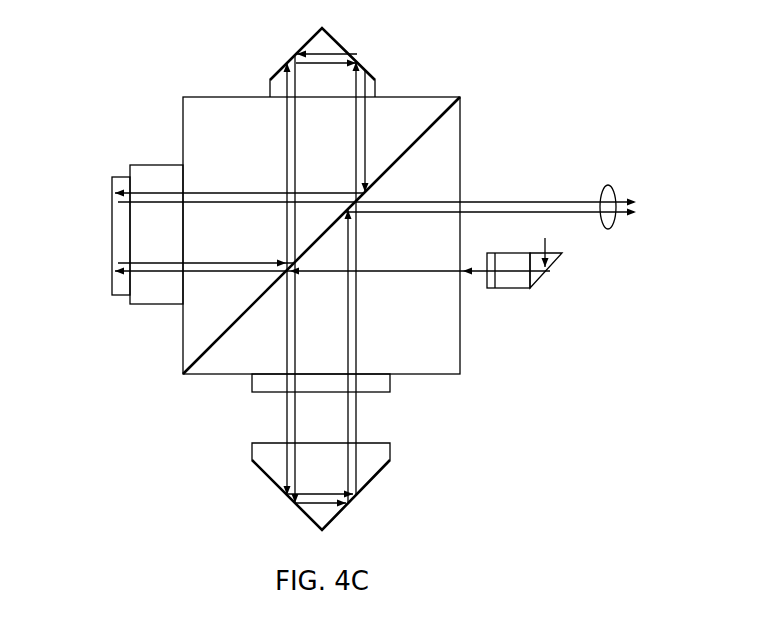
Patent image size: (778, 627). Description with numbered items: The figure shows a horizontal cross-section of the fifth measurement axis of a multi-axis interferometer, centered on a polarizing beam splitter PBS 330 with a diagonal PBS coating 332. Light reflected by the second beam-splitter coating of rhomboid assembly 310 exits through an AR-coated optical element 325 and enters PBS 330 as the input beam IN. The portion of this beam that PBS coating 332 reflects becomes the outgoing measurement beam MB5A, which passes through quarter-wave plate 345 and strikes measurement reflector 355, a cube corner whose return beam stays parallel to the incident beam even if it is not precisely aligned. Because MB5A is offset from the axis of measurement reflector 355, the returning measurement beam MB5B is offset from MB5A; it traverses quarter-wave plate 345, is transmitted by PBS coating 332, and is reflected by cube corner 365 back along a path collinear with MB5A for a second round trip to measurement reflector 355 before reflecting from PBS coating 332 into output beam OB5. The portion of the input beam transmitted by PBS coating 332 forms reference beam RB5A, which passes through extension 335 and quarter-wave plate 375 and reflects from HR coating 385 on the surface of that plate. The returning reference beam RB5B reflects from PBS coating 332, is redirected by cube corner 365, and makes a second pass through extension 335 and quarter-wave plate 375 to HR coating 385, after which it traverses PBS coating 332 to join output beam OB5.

The PBS 330 is at (338, 315).
The PBS coating 332 is at (407, 150).
The cube corner 365 is at (322, 45).
The measurement reflector 355 is at (268, 452).
The quarter-wave plate 345 is at (260, 383).
The extension 335 is at (173, 243).
The HR coating 385 is at (112, 210).
The quarter-wave plate 375 is at (120, 253).
The optical element 325 is at (490, 285).
The rhomboid assembly 310 is at (510, 283).
The input beam IN is at (332, 249).
The output beam OB5 is at (610, 228).
The reference beam RB5A is at (280, 262).
The reflected reference beam RB5B is at (253, 192).
The outgoing measurement beam MB5A is at (287, 400).
The reflected measurement beam MB5B is at (357, 418).